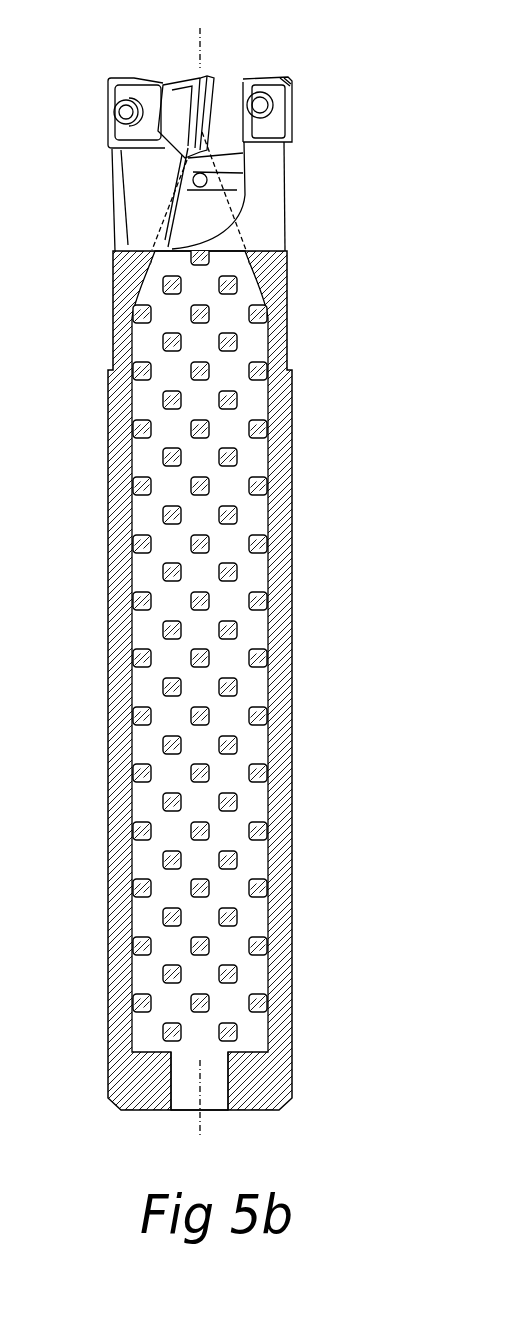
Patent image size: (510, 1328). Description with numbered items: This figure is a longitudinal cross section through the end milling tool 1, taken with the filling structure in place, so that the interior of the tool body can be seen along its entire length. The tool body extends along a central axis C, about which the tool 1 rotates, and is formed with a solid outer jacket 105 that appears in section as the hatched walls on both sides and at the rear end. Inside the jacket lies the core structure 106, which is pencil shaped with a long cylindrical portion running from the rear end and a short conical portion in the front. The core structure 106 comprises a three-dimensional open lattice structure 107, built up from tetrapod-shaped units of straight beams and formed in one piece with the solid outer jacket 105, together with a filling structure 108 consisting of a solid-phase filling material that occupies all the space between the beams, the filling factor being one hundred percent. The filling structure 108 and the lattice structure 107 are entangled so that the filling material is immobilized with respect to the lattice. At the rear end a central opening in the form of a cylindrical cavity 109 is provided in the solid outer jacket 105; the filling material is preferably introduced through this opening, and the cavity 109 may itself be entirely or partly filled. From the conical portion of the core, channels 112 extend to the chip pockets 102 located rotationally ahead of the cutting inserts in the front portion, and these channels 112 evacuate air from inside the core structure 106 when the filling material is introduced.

The end milling tool 1 is at (58, 164).
The chip pocket 102 is at (233, 113).
The solid outer jacket 105 is at (283, 612).
The core structure 106 is at (253, 678).
The lattice structure 107 is at (262, 370).
The filling structure 108 is at (255, 513).
The cylindrical cavity 109 is at (182, 1093).
The channel 112 is at (207, 183).
The central axis C is at (201, 567).